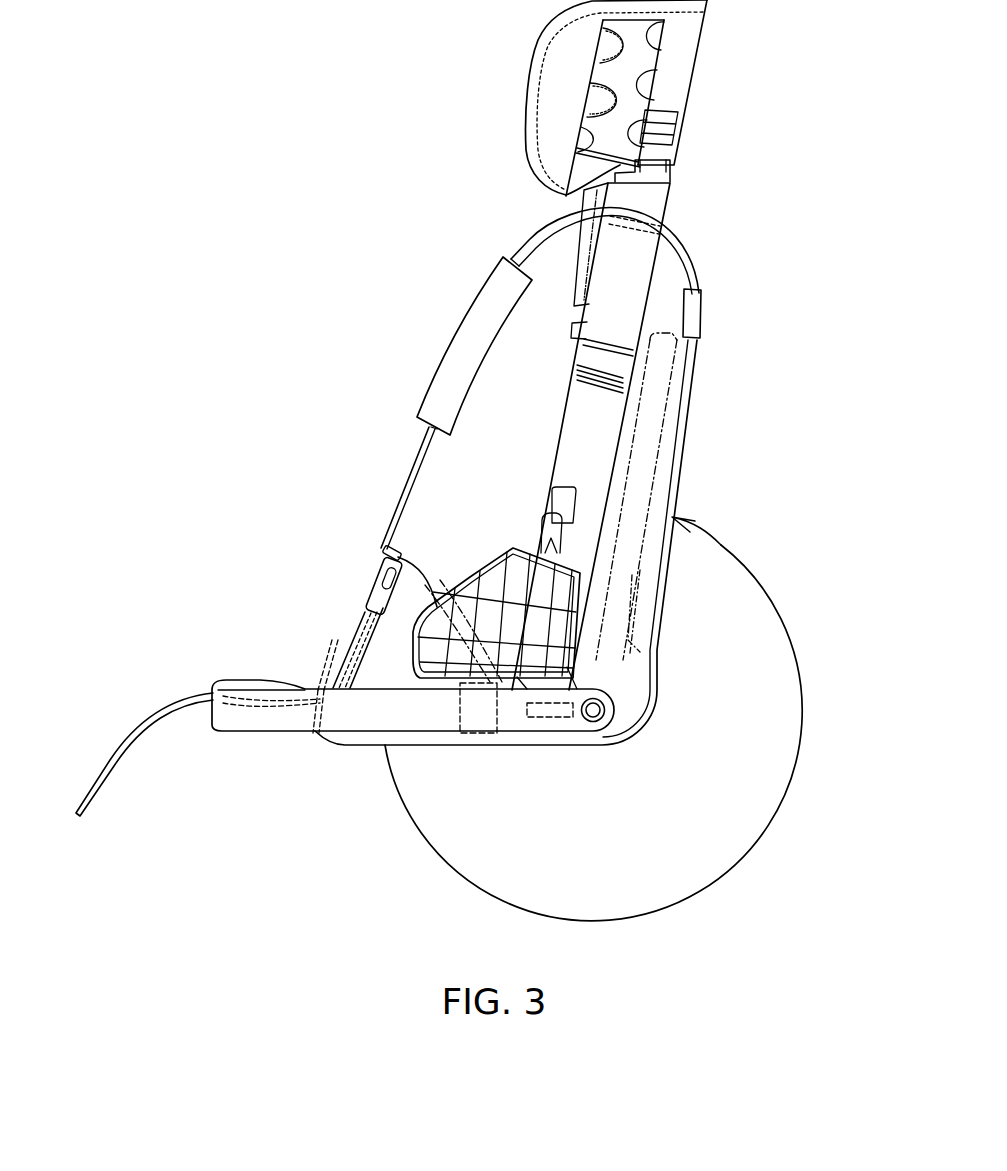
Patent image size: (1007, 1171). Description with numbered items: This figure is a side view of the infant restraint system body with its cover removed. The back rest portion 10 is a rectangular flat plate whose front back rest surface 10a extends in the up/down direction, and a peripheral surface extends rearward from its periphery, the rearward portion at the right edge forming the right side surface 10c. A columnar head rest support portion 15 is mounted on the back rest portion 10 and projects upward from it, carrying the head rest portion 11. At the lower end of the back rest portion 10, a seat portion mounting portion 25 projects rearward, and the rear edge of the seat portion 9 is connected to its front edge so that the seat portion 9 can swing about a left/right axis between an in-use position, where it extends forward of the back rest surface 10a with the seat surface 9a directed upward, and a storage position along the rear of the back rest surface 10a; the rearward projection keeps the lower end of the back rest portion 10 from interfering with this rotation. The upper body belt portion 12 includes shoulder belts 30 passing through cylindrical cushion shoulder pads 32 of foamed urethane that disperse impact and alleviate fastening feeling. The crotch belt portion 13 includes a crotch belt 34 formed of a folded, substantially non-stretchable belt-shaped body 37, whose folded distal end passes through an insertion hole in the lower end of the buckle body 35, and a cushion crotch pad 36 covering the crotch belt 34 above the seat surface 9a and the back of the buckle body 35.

The seat portion 9 is at (228, 717).
The seat surface 9a is at (388, 686).
The back rest portion 10 is at (668, 239).
The back rest surface 10a is at (560, 425).
The right side surface 10c is at (627, 294).
The head rest portion 11 is at (555, 74).
The upper body belt portion 12 is at (440, 360).
The crotch belt portion 13 is at (363, 753).
The head rest support portion 15 is at (657, 176).
The seat portion mounting portion 25 is at (547, 722).
The shoulder belt 30 is at (432, 449).
The cushion shoulder pad 32 is at (472, 350).
The crotch belt 34 is at (316, 670).
The buckle body 35 is at (365, 588).
The cushion crotch pad 36 is at (335, 648).
The belt-shaped body 37 is at (473, 745).